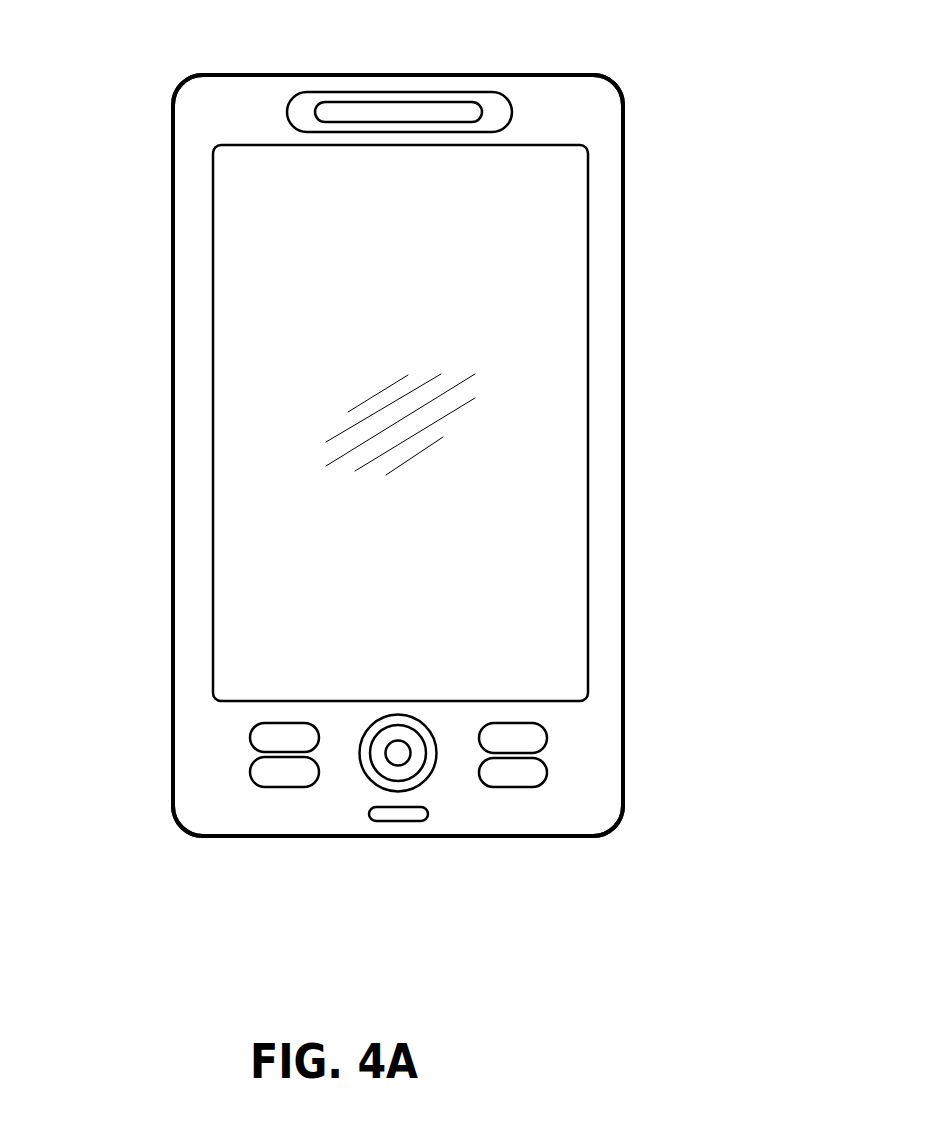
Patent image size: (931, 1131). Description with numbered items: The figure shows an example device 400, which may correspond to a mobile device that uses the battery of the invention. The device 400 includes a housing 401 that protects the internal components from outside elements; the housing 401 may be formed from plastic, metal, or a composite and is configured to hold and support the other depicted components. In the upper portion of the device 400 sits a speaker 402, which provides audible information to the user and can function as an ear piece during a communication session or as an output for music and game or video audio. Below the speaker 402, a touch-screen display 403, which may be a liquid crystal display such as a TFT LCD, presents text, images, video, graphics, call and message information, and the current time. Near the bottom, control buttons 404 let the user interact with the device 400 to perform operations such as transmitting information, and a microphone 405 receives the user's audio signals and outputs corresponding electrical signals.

The device 400 is at (193, 40).
The housing 401 is at (173, 223).
The speaker 402 is at (287, 112).
The touch-screen display 403 is at (237, 280).
The control buttons 404 is at (227, 734).
The microphone 405 is at (400, 820).